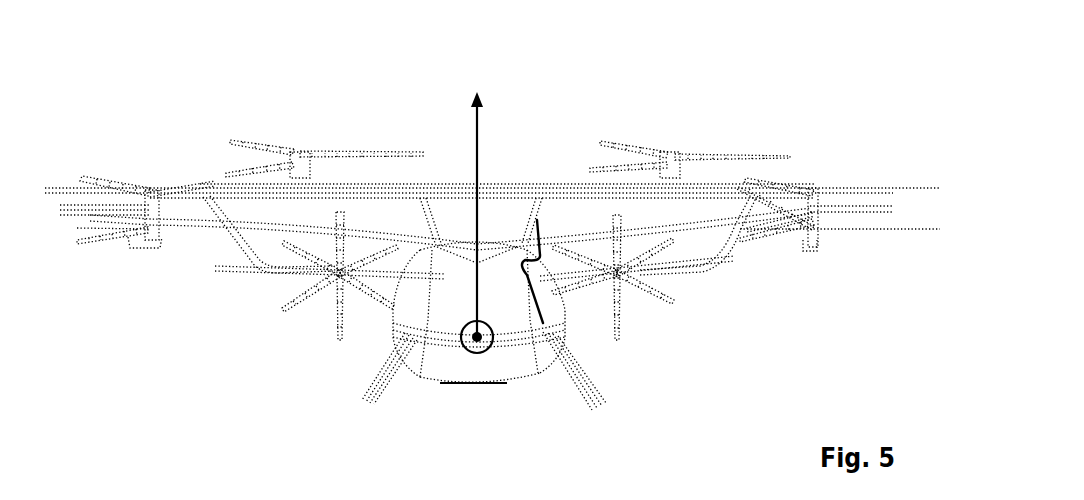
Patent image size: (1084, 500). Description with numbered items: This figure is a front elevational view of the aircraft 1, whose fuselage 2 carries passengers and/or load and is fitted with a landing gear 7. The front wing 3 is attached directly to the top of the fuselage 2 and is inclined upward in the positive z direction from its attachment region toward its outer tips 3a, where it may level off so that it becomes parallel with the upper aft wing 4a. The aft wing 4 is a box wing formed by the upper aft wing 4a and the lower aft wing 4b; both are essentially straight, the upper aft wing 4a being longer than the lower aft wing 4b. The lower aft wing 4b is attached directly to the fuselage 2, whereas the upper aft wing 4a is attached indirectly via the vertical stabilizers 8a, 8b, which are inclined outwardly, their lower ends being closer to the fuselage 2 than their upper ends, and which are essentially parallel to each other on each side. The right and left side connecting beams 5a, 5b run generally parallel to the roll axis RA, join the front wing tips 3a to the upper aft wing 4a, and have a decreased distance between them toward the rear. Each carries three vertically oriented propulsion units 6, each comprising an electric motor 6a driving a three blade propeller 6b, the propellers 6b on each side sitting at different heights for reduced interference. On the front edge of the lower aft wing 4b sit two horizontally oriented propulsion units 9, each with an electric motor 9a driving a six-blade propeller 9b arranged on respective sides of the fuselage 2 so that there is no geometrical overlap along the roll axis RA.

The aircraft 1 is at (747, 126).
The fuselage 2 is at (455, 363).
The front wing 3 is at (277, 228).
The tips of front wing 3a is at (862, 208).
The aft wing 4 is at (541, 138).
The upper aft wing 4a is at (500, 185).
The lower aft wing 4b is at (662, 276).
The right side connecting beam 5a is at (147, 223).
The left side connecting beam 5b is at (700, 177).
The propulsion unit 6 is at (291, 146).
The electric motor 6a is at (147, 240).
The three blade propeller 6b is at (95, 243).
The landing gear 7 is at (373, 393).
The vertical stabiliser 8a is at (420, 208).
The further vertical stabiliser 8b is at (714, 250).
The horizontally oriented propulsion unit 9 is at (257, 322).
The electric motor 9a is at (326, 298).
The propeller 9b is at (338, 302).
The roll axis RA is at (483, 342).